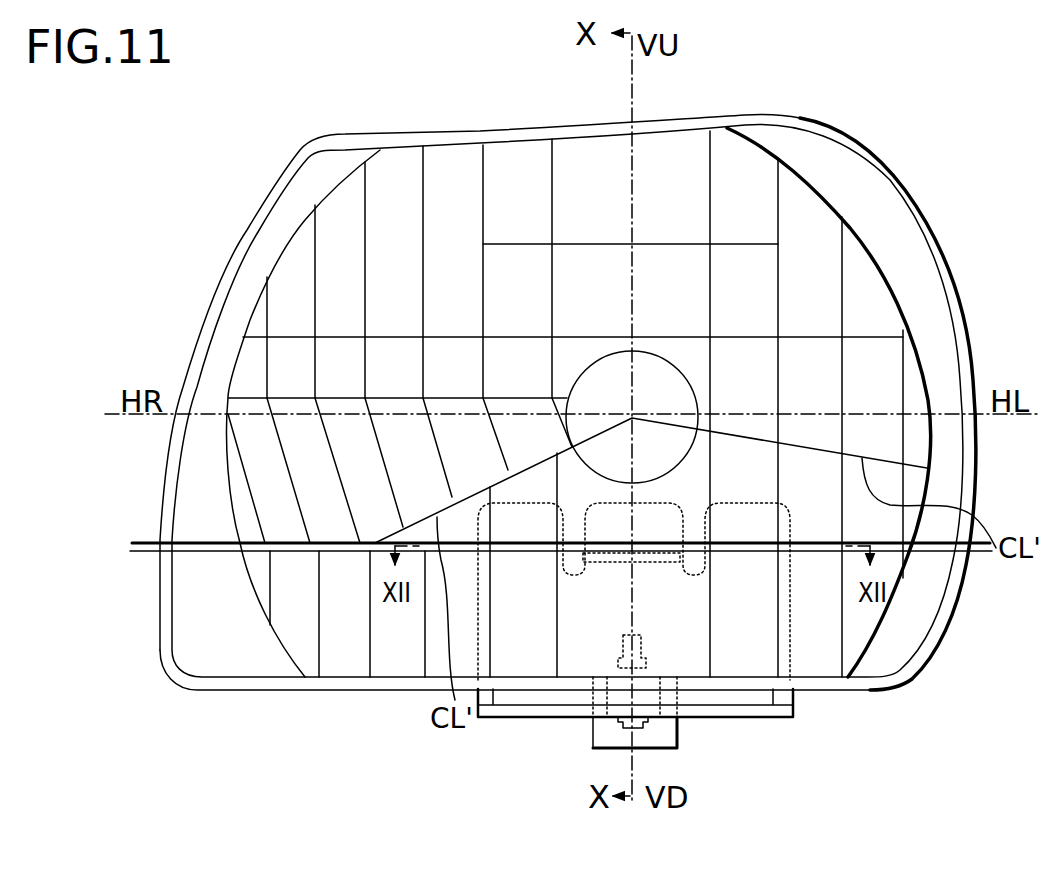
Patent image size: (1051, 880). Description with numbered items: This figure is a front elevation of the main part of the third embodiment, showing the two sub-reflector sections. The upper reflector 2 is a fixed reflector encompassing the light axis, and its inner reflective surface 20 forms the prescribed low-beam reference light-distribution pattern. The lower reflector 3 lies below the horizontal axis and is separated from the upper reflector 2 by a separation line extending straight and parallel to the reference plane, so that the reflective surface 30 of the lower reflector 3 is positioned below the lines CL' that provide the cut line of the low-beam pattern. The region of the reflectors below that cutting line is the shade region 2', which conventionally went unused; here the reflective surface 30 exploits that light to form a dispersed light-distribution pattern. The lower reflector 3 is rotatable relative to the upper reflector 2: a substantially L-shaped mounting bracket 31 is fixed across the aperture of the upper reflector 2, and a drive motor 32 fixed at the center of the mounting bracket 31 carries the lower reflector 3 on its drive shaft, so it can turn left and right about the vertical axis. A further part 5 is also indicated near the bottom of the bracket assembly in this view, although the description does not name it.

The upper reflector 2 is at (565, 352).
The reflective surface 20 is at (795, 203).
The shade region 2' is at (616, 417).
The lower reflector 3 is at (907, 626).
The reflective surface 30 is at (818, 655).
The mounting bracket 31 is at (780, 722).
The drive motor 32 is at (682, 745).
The fixing bolt 5 is at (605, 712).